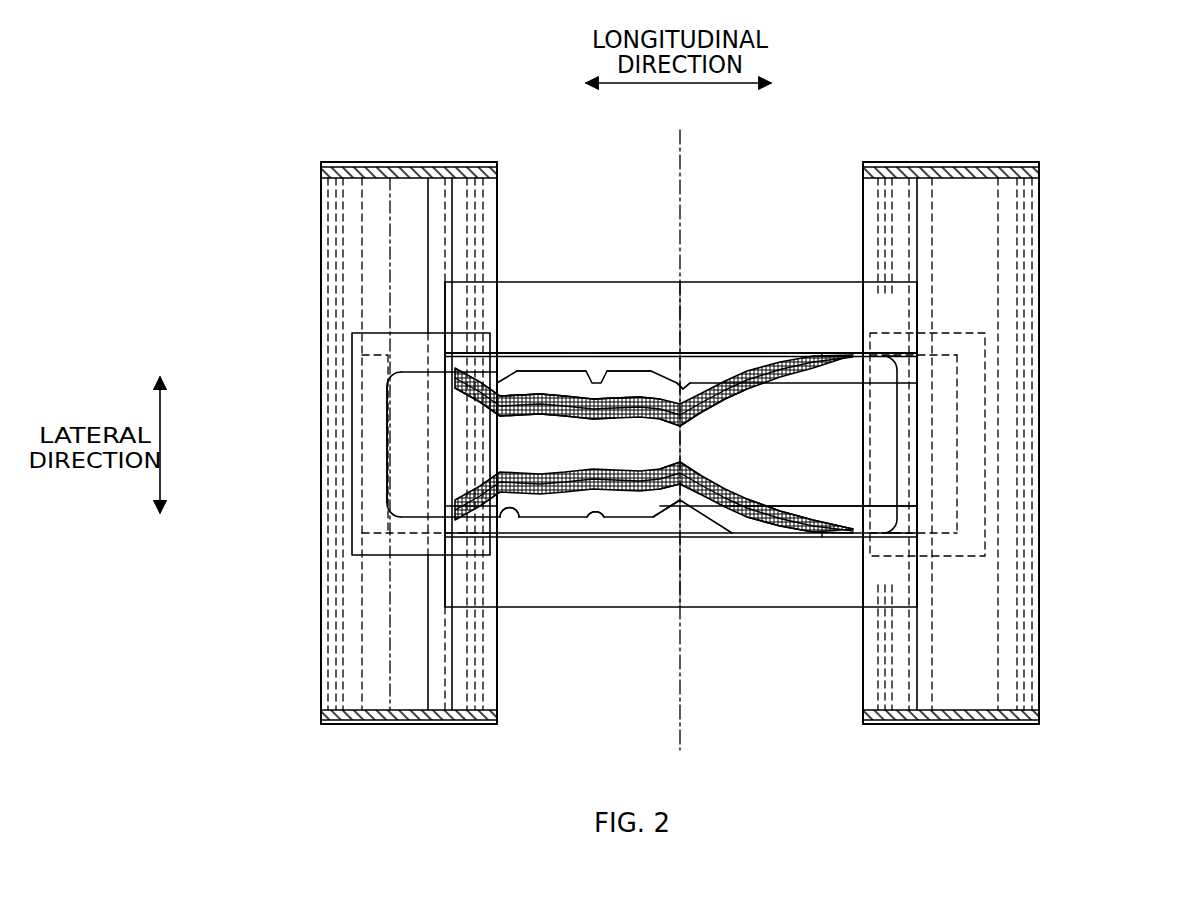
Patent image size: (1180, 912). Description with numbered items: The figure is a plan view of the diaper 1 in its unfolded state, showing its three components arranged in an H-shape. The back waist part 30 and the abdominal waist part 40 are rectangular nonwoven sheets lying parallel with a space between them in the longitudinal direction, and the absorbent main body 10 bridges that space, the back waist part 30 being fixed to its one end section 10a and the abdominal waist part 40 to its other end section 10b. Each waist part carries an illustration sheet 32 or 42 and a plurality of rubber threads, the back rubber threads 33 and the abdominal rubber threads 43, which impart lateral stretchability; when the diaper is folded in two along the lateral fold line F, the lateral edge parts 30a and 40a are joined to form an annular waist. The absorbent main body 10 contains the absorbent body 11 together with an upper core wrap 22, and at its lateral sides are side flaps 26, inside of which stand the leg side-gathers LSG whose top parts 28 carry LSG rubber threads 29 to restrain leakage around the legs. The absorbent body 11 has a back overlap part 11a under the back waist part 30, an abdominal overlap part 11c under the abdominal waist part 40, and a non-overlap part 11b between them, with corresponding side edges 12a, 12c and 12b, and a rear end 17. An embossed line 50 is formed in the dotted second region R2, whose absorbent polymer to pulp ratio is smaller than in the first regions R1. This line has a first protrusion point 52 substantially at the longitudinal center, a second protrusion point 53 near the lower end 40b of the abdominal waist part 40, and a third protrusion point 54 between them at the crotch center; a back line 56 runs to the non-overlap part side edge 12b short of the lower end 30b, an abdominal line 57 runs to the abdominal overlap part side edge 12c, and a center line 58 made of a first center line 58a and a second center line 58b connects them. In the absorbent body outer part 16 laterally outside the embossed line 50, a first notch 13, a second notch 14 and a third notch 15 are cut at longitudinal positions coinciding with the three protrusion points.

The diaper 1 is at (255, 205).
The absorbent main body 10 is at (633, 346).
The one end section 10a is at (947, 428).
The other end section 10b is at (412, 432).
The absorbent body 11 is at (710, 383).
The back overlap part 11a is at (883, 447).
The non-overlap part 11b is at (840, 485).
The abdominal overlap part 11c is at (472, 455).
The back overlap part side edge 12a is at (880, 350).
The non-overlap part side edge 12b is at (691, 383).
The abdominal overlap part side edge 12c is at (410, 367).
The first notch 13 is at (668, 512).
The second notch 14 is at (510, 512).
The third notch 15 is at (593, 512).
The absorbent body outer part 16 is at (597, 383).
The rear end 17 is at (898, 403).
The upper core wrap 22 is at (957, 522).
The side flaps 26 is at (684, 300).
The top parts 28 is at (808, 506).
The LSG rubber threads 29 is at (800, 525).
The back waist part 30 is at (973, 208).
The edge parts 30a is at (987, 166).
The lower end 30b is at (853, 362).
The illustration sheet 32 is at (960, 556).
The back rubber threads 33 is at (890, 645).
The abdominal waist part 40 is at (372, 252).
The edge parts 40a is at (372, 166).
The lower end 40b is at (504, 383).
The illustration sheet 42 is at (407, 558).
The abdominal rubber threads 43 is at (345, 645).
The embossed line 50 is at (625, 483).
The first protrusion point 52 is at (687, 425).
The second protrusion point 53 is at (540, 400).
The third protrusion point 54 is at (590, 400).
The back line 56 is at (718, 405).
The abdominal line 57 is at (483, 397).
The center line 58 is at (548, 400).
The first center line 58a is at (618, 400).
The second center line 58b is at (532, 395).
The fold line F is at (688, 388).
The leg side-gathers LSG is at (822, 372).
The first regions R1 is at (728, 482).
The second region R2 is at (700, 467).